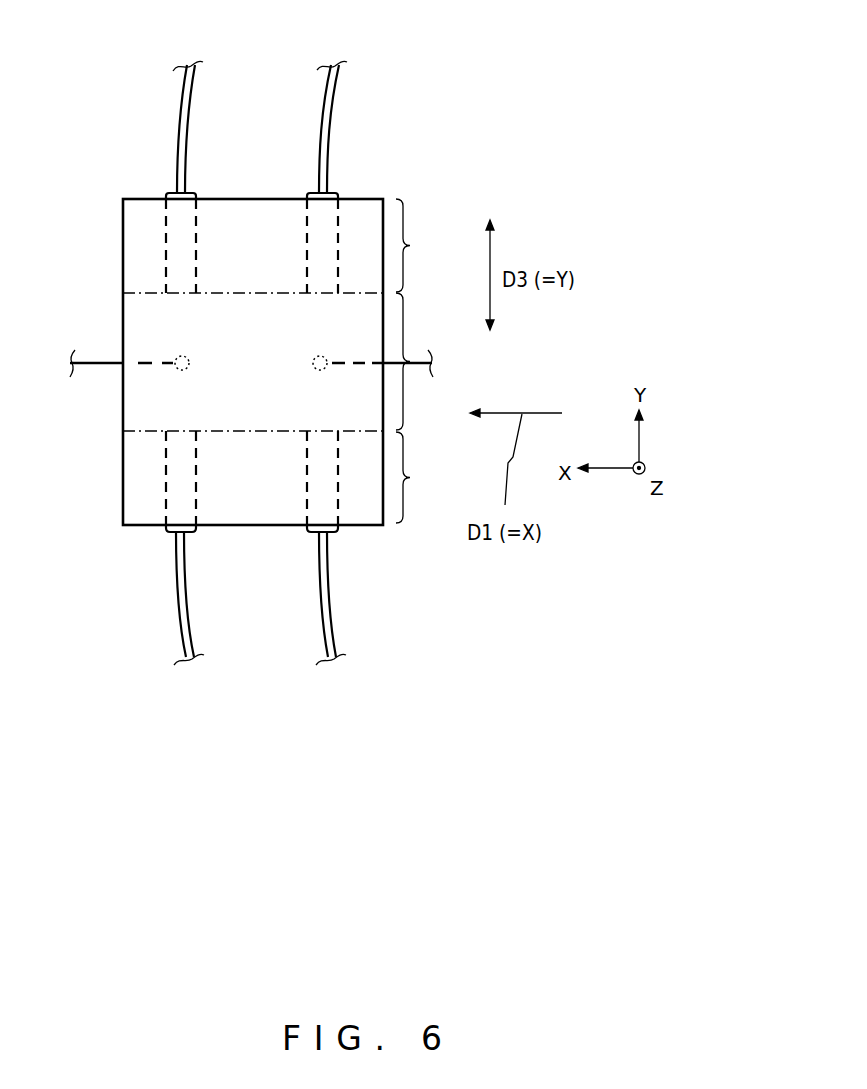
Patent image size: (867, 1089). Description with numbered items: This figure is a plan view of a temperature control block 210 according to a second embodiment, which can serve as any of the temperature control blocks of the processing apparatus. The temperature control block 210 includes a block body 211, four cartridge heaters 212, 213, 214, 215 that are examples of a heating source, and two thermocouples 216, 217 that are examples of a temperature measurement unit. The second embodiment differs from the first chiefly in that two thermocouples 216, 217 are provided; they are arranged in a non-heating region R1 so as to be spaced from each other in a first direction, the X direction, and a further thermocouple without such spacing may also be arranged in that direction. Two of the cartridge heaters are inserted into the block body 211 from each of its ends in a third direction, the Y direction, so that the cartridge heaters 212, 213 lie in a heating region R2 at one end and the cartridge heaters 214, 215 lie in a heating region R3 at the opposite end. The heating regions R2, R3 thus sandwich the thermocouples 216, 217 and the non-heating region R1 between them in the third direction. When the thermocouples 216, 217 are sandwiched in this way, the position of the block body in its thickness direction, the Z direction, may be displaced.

The temperature control block 210 is at (385, 189).
The block body 211 is at (218, 207).
The cartridge heater 212 is at (165, 519).
The cartridge heater 213 is at (338, 455).
The cartridge heater 214 is at (172, 215).
The cartridge heater 215 is at (338, 213).
The thermocouple 216 is at (176, 356).
The thermocouple 217 is at (327, 368).
The non-heating region R1 is at (424, 361).
The heating region R2 is at (424, 477).
The heating region R3 is at (424, 245).